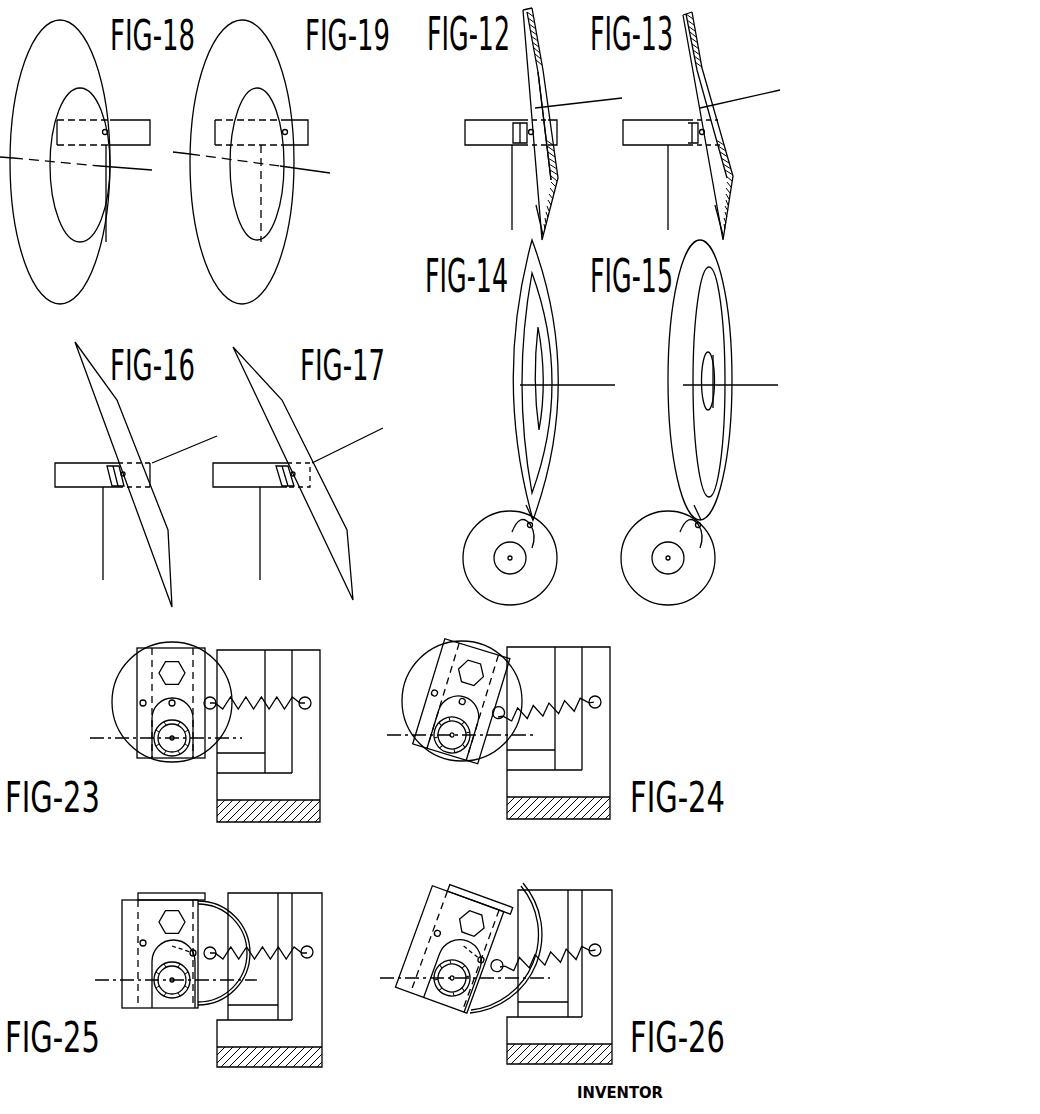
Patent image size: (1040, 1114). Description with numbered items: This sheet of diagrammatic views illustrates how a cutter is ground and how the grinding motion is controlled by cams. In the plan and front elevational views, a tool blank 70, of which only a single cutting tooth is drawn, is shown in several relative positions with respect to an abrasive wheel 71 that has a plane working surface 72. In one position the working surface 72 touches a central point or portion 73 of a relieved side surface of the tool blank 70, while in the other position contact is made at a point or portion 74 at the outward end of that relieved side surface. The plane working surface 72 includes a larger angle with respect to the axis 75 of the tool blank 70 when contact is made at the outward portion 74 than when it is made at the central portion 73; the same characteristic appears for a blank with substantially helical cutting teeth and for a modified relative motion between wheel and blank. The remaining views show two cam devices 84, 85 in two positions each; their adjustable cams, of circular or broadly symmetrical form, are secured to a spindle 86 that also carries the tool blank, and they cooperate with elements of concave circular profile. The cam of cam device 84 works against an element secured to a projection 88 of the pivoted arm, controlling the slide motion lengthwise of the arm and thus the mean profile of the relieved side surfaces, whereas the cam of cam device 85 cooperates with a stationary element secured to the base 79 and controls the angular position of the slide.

In FIG. 18, the tool blank 70 is at (134, 126).
In FIG. 19, the tool blank 70 is at (306, 128).
In FIG. 12, the tool blank 70 is at (477, 130).
In FIG. 13, the tool blank 70 is at (658, 130).
In FIG. 14, the tool blank 70 is at (511, 556).
In FIG. 15, the tool blank 70 is at (676, 556).
In FIG. 16, the tool blank 70 is at (102, 521).
In FIG. 17, the tool blank 70 is at (261, 521).
In FIG. 18, the abrasive wheel 71 is at (103, 96).
In FIG. 19, the abrasive wheel 71 is at (286, 100).
In FIG. 12, the abrasive wheel 71 is at (536, 87).
In FIG. 13, the abrasive wheel 71 is at (697, 77).
In FIG. 14, the abrasive wheel 71 is at (552, 414).
In FIG. 15, the abrasive wheel 71 is at (725, 414).
In FIG. 12, the plane working surface 72 is at (540, 222).
In FIG. 13, the plane working surface 72 is at (720, 226).
In FIG. 14, the plane working surface 72 is at (533, 516).
In FIG. 15, the plane working surface 72 is at (702, 516).
In FIG. 16, the plane working surface 72 is at (105, 430).
In FIG. 17, the plane working surface 72 is at (262, 430).
In FIG. 12, the central point or portion of relieved side surface 73 is at (531, 145).
In FIG. 14, the central point or portion of relieved side surface 73 is at (540, 531).
In FIG. 16, the central point or portion of relieved side surface 73 is at (116, 476).
In FIG. 13, the point or portion of outward end of relieved side surface 74 is at (701, 145).
In FIG. 15, the point or portion of outward end of relieved side surface 74 is at (706, 530).
In FIG. 17, the point or portion of outward end of relieved side surface 74 is at (285, 476).
In FIG. 12, the axis of tool 75 is at (512, 185).
In FIG. 13, the axis of tool 75 is at (668, 185).
In FIG. 14, the axis of tool 75 is at (512, 560).
In FIG. 15, the axis of tool 75 is at (670, 560).
In FIG. 25, the base 79 is at (275, 1052).
In FIG. 26, the base 79 is at (520, 1065).
In FIG. 23, the cam device 84 is at (219, 677).
In FIG. 24, the cam device 84 is at (518, 678).
In FIG. 25, the cam device 85 is at (245, 908).
In FIG. 26, the cam device 85 is at (540, 905).
In FIG. 23, the spindle 86 is at (175, 760).
In FIG. 24, the spindle 86 is at (444, 760).
In FIG. 25, the spindle 86 is at (175, 1010).
In FIG. 26, the spindle 86 is at (440, 1010).
In FIG. 23, the projection of arm 88 is at (321, 809).
In FIG. 24, the projection of arm 88 is at (505, 809).